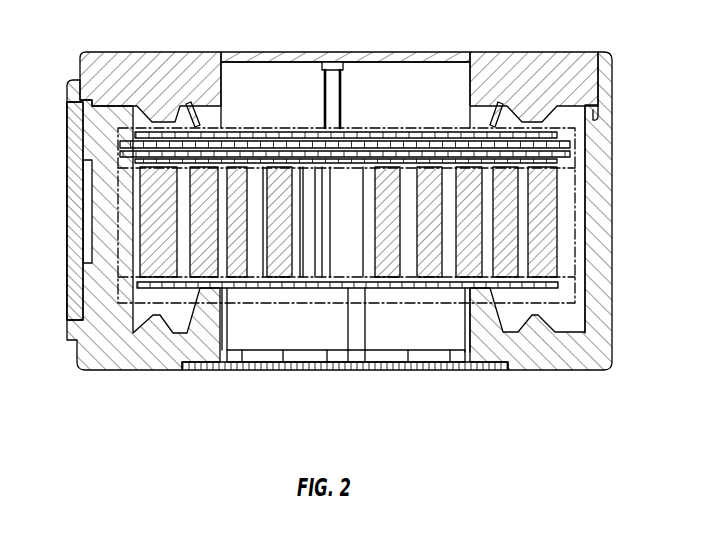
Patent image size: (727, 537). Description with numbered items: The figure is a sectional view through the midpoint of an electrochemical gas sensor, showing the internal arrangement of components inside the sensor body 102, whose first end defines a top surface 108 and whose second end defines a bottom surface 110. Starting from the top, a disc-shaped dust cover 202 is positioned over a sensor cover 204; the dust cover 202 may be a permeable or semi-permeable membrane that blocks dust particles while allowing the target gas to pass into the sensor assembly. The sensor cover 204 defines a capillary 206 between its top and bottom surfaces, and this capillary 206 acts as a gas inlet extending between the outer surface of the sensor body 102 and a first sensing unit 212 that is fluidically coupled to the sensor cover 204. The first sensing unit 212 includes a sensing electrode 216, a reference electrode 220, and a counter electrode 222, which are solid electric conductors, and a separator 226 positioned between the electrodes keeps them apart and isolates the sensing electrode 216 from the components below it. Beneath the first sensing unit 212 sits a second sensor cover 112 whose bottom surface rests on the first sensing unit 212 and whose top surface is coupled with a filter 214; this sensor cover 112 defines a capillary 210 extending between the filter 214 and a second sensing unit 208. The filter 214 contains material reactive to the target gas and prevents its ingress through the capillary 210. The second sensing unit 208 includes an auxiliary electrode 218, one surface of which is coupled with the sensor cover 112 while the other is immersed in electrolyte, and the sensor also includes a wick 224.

The sensor body 102 is at (112, 360).
The top surface 108 is at (472, 333).
The bottom surface 110 is at (67, 152).
The sensor cover 112 is at (237, 368).
The dust cover 202 is at (292, 52).
The sensor cover 204 is at (257, 88).
The capillary 206 is at (342, 90).
The second sensing unit 208 is at (583, 287).
The capillary 210 is at (337, 352).
The first sensing unit 212 is at (573, 137).
The filter 214 is at (355, 350).
The sensing electrode 216 is at (142, 128).
The auxiliary electrode 218 is at (137, 285).
The reference electrode 220 is at (125, 145).
The counter electrode 222 is at (130, 163).
The wick 224 is at (203, 220).
The separator 226 is at (120, 156).